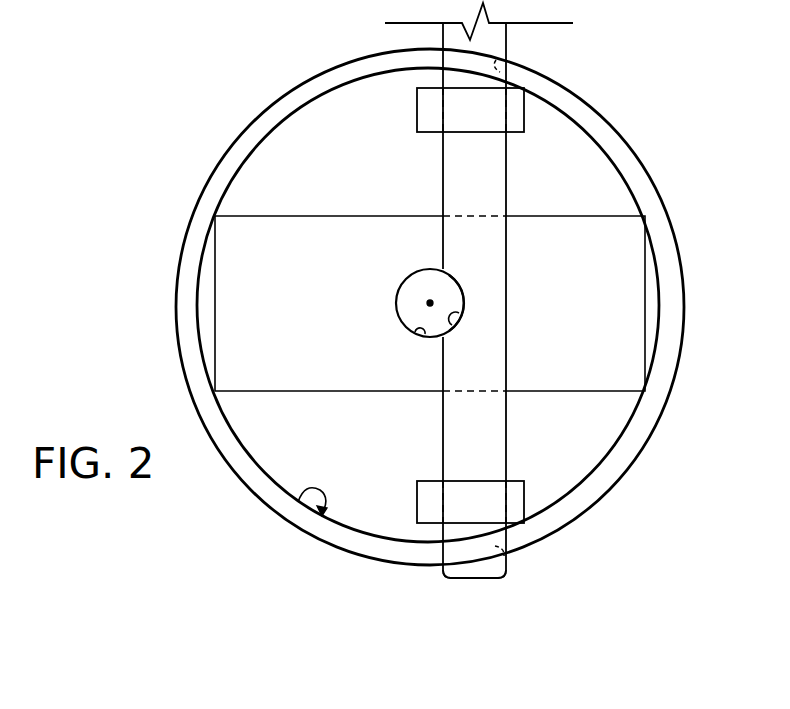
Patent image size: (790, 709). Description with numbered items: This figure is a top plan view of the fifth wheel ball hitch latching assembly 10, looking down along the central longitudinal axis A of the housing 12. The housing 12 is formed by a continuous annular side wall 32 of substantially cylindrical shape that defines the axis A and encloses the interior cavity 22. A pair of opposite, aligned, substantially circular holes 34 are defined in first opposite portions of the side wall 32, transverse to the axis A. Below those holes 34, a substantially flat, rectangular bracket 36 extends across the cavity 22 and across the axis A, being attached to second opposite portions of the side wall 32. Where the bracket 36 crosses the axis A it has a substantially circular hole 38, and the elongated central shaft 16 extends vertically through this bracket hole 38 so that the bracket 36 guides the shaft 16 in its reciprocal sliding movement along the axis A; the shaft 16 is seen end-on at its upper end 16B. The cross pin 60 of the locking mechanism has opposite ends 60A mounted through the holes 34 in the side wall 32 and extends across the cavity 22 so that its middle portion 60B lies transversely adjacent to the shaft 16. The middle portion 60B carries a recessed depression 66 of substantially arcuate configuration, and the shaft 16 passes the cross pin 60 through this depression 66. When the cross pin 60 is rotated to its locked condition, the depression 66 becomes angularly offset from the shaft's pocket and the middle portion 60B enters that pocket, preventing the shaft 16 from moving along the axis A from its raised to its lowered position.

The fifth wheel ball hitch latching assembly 10 is at (430, 307).
The housing 12 is at (603, 112).
The central shaft 16 is at (452, 310).
The upper end of central shaft 16B is at (457, 298).
The interior cavity 22 is at (298, 502).
The annular side wall 32 is at (595, 499).
The holes 34 is at (508, 55).
The bracket 36 is at (280, 220).
The bracket hole 38 is at (424, 335).
The cross pin 60 is at (440, 308).
The opposite ends of cross pin 60A is at (443, 33).
The middle portion of cross pin 60B is at (502, 250).
The recessed depression 66 is at (458, 323).
The central longitudinal axis A is at (430, 303).